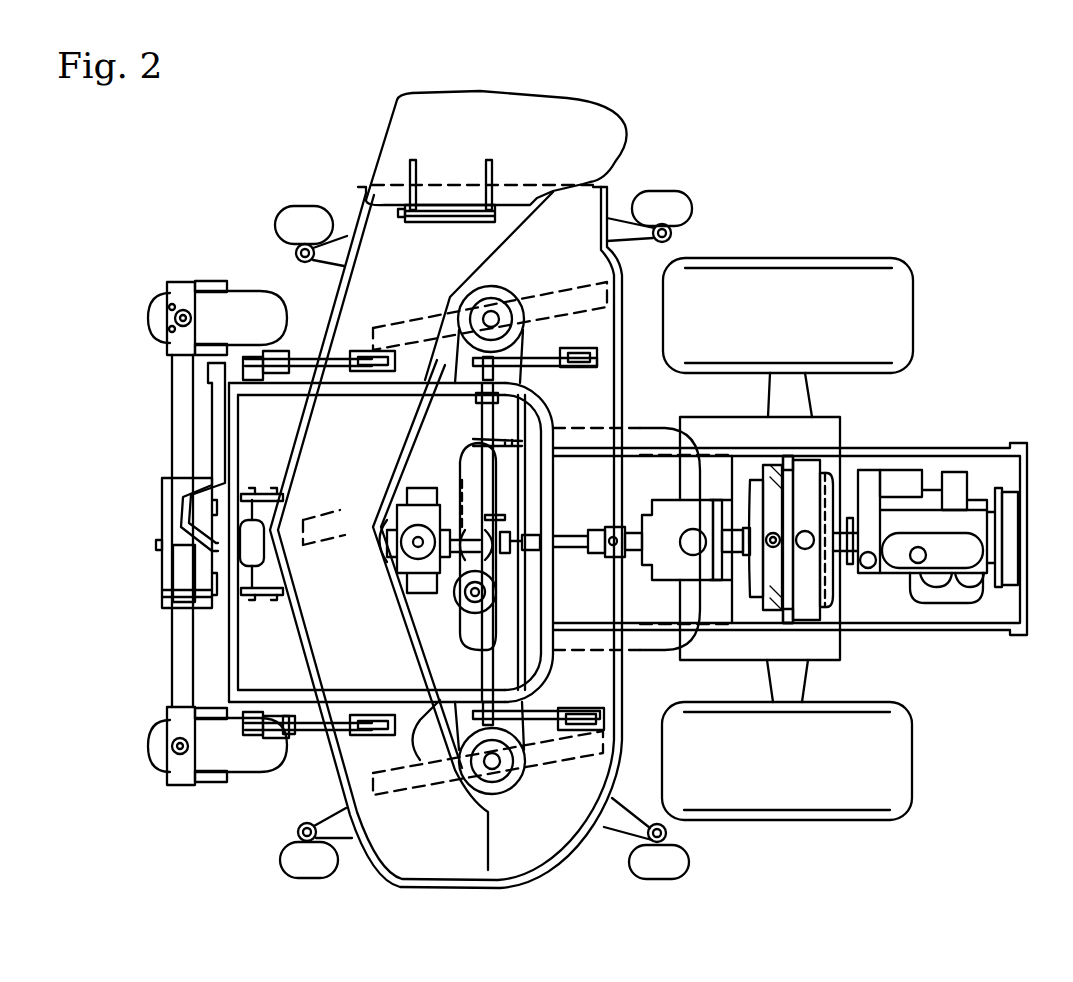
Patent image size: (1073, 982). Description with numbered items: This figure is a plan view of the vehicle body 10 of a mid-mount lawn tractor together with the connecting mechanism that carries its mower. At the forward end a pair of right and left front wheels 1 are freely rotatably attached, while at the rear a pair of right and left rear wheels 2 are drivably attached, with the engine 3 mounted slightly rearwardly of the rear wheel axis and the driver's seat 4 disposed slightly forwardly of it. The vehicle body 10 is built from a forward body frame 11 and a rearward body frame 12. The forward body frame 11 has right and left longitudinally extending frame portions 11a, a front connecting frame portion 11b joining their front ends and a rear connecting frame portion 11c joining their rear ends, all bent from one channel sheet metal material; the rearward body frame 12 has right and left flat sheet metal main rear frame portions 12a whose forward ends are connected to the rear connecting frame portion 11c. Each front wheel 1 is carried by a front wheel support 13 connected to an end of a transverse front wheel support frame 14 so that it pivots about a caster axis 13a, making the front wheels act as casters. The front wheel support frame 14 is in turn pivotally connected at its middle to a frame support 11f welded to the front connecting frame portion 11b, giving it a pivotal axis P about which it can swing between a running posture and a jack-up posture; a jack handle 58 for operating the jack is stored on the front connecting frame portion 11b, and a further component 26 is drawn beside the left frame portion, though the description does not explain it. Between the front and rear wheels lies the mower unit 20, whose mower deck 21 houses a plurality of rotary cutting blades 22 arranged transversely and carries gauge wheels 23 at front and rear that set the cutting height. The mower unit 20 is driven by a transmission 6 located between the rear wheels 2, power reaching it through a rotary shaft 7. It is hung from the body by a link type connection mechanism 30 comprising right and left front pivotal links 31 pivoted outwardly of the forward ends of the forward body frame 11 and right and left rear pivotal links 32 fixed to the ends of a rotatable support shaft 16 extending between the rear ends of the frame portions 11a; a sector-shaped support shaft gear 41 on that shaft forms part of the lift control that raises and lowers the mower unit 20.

The front wheel 1 is at (148, 320).
The rear wheel 2 is at (852, 257).
The engine 3 is at (952, 600).
The driver's seat 4 is at (640, 660).
The transmission 6 is at (642, 508).
The rotary shaft 7 is at (572, 548).
The vehicle body 10 is at (823, 331).
The forward body frame 11 is at (405, 516).
The frame portion 11a is at (362, 396).
The front connecting frame portion 11b is at (210, 398).
The rear connecting frame portion 11c is at (553, 607).
The frame support 11f is at (162, 506).
The rearward body frame 12 is at (862, 446).
The main rear frame portion 12a is at (922, 448).
The front wheel support 13 is at (178, 288).
The caster axis 13a is at (186, 308).
The front wheel support frame 14 is at (175, 633).
The rotatable support shaft 16 is at (480, 663).
The mower unit 20 is at (345, 200).
The mower deck 21 is at (607, 765).
The rotary cutting blade 22 is at (422, 322).
The gauge wheel 23 is at (288, 210).
The damper 26 is at (262, 538).
The link type connection mechanism 30 is at (296, 742).
The front pivotal link 31 is at (325, 348).
The rear pivotal link 32 is at (543, 340).
The support shaft gear 41 is at (475, 440).
The jack handle 58 is at (212, 447).
The pivotal axis P is at (156, 545).